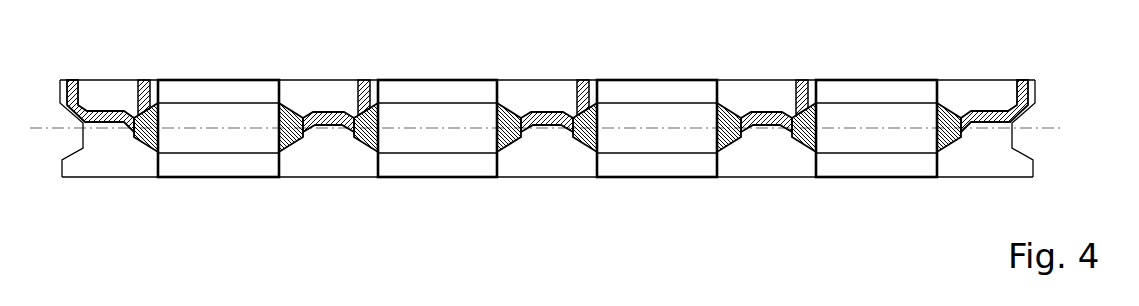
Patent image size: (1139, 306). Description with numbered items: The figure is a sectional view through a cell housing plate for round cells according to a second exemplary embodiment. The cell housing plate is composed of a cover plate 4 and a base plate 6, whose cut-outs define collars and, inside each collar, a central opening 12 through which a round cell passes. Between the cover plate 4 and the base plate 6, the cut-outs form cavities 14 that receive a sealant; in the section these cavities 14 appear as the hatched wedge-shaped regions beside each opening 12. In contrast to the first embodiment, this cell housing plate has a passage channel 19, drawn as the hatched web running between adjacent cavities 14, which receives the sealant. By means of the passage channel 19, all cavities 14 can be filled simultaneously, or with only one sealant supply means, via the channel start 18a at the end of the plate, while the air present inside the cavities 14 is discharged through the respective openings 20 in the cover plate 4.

The cover plate 4 is at (548, 90).
The base plate 6 is at (547, 170).
The opening 12 is at (218, 137).
The cavity 14 is at (162, 115).
The channel start 18a is at (73, 80).
The passage channel 19 is at (538, 112).
The opening 20 is at (582, 81).